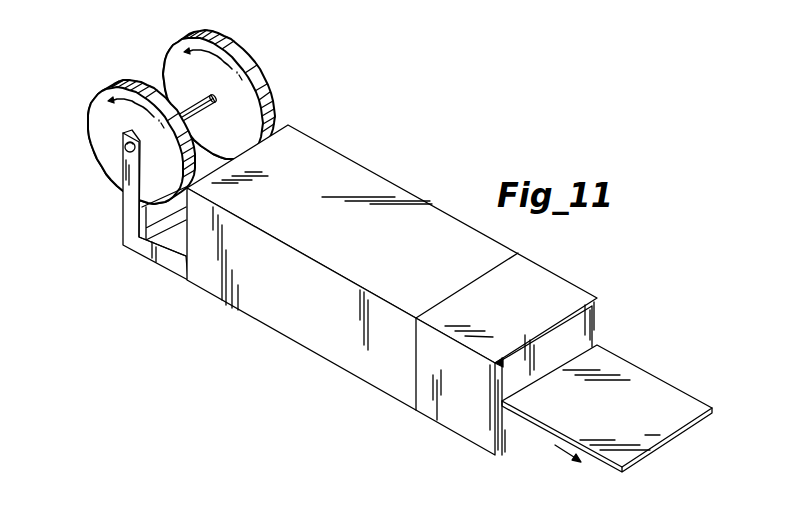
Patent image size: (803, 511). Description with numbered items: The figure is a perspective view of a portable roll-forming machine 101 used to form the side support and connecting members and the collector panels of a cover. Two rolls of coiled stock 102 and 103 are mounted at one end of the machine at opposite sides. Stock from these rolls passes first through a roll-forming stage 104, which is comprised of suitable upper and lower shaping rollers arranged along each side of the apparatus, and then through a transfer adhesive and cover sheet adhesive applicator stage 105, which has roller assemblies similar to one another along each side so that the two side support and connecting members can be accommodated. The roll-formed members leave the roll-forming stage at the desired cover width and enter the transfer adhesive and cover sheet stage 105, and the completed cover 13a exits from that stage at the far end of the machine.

The portable roll-forming machine 101 is at (408, 290).
The roll of coiled stock 102 is at (97, 118).
The roll of coiled stock 103 is at (262, 83).
The roll-forming stage 104 is at (293, 317).
The transfer adhesive and cover sheet adhesive applicator stage 105 is at (560, 290).
The cover 13a is at (668, 373).